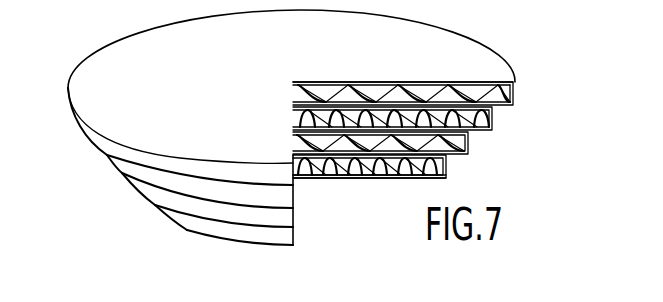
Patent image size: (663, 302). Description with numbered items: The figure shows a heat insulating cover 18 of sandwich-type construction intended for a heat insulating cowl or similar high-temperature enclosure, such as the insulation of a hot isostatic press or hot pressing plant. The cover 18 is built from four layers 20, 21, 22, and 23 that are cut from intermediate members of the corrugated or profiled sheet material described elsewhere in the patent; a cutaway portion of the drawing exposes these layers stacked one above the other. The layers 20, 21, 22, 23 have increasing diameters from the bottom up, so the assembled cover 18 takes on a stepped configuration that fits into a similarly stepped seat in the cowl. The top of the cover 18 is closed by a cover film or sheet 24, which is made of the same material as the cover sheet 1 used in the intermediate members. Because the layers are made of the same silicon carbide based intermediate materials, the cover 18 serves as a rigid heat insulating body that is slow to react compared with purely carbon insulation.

The cover sheet 1 is at (362, 178).
The heat insulating cover 18 is at (88, 43).
The layer 20 is at (437, 165).
The layer 21 is at (445, 141).
The layer 22 is at (477, 123).
The layer 23 is at (488, 101).
The cover film or sheet 24 is at (478, 82).